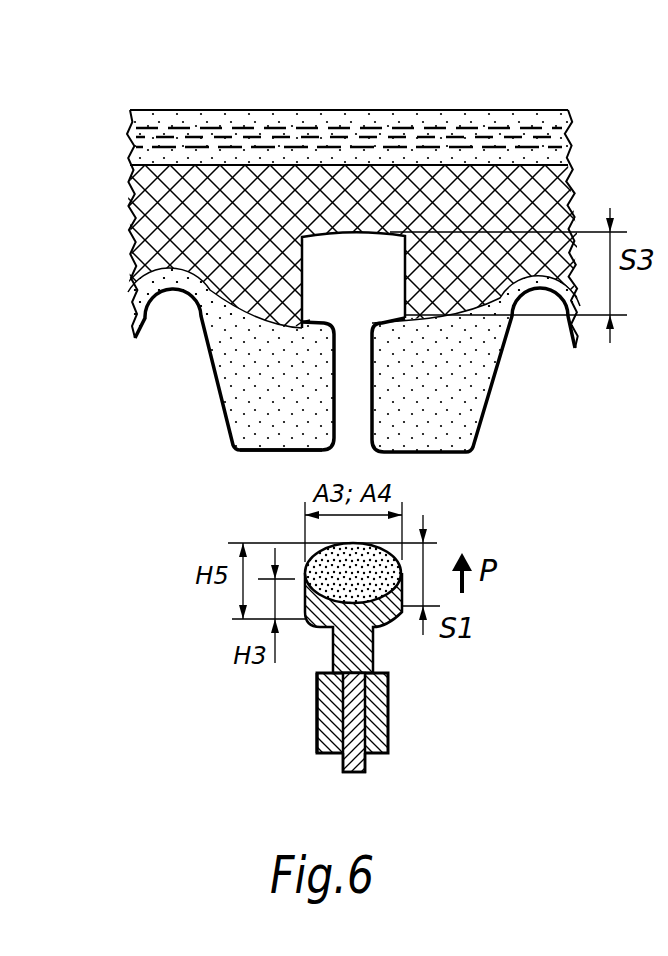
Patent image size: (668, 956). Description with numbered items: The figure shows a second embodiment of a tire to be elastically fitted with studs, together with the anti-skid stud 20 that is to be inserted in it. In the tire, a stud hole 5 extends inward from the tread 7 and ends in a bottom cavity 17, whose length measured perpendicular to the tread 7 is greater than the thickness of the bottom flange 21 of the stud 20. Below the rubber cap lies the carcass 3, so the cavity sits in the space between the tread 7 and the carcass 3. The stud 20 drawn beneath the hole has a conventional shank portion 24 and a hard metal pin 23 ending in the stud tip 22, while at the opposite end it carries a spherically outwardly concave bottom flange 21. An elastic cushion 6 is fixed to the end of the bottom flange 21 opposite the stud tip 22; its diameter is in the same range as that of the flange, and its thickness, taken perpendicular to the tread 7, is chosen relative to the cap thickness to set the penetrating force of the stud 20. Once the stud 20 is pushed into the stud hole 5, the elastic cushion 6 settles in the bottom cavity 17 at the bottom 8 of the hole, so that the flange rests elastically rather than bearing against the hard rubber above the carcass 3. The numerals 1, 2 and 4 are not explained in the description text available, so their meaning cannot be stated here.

The support layer (cross-hatched carrier) 1 is at (135, 195).
The right clamping block 2 is at (473, 372).
The carcass 3 is at (333, 130).
The elastic covering layer 4 is at (163, 342).
The stud hole 5 is at (347, 402).
The elastic cushion 6 is at (387, 628).
The tread 7 is at (260, 458).
The bottom of stud hole 8 is at (304, 326).
The bottom cavity 17 is at (336, 282).
The anti-skid stud 20 is at (375, 702).
The bottom flange 21 is at (333, 628).
The stud tip 22 is at (357, 780).
The hard metal pin 23 is at (355, 740).
The shank portion 24 is at (318, 716).